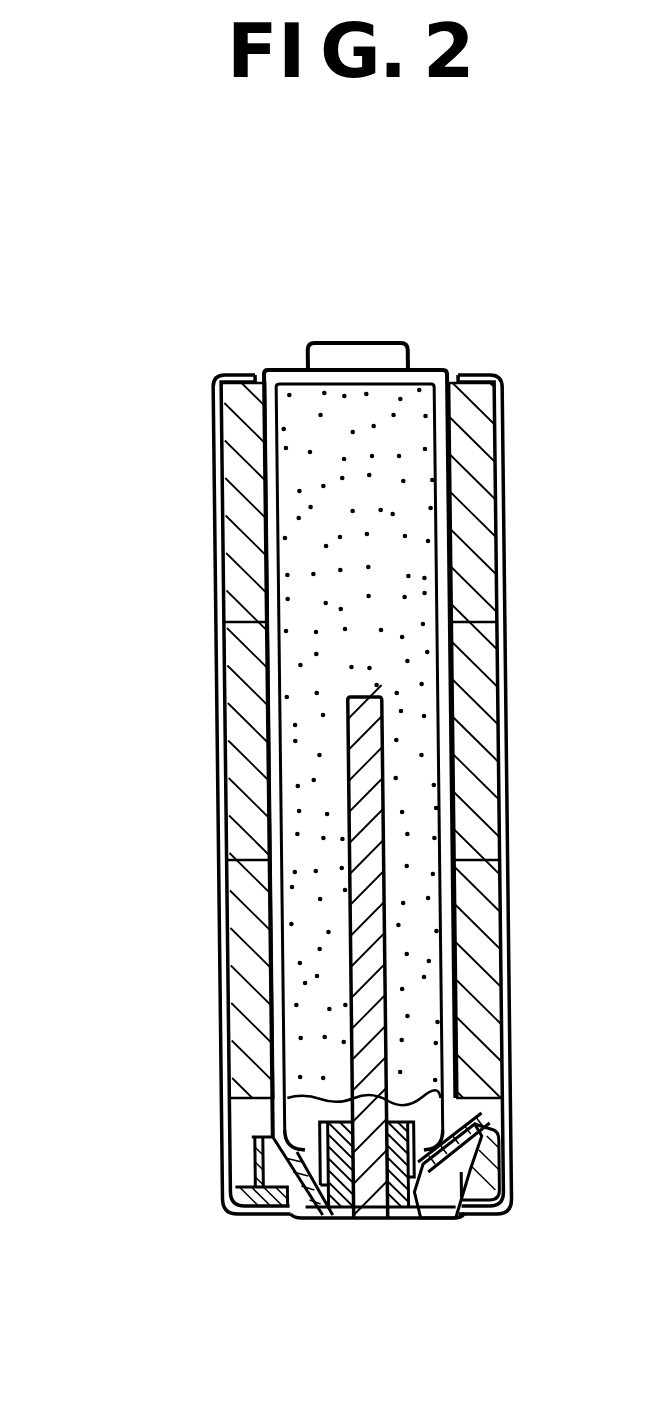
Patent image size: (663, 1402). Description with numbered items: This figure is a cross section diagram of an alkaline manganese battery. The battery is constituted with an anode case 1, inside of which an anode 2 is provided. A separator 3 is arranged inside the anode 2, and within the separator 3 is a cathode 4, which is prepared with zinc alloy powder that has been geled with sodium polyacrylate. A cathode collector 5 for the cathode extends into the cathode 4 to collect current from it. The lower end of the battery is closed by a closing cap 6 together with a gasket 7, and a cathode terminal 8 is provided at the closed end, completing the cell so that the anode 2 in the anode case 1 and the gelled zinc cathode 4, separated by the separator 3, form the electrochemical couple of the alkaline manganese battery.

The anode case 1 is at (266, 370).
The anode 2 is at (237, 688).
The separator 3 is at (268, 755).
The cathode 4 is at (298, 585).
The cathode collector 5 is at (350, 952).
The closing cap 6 is at (318, 1122).
The gasket 7 is at (312, 1182).
The cathode terminal 8 is at (305, 1222).